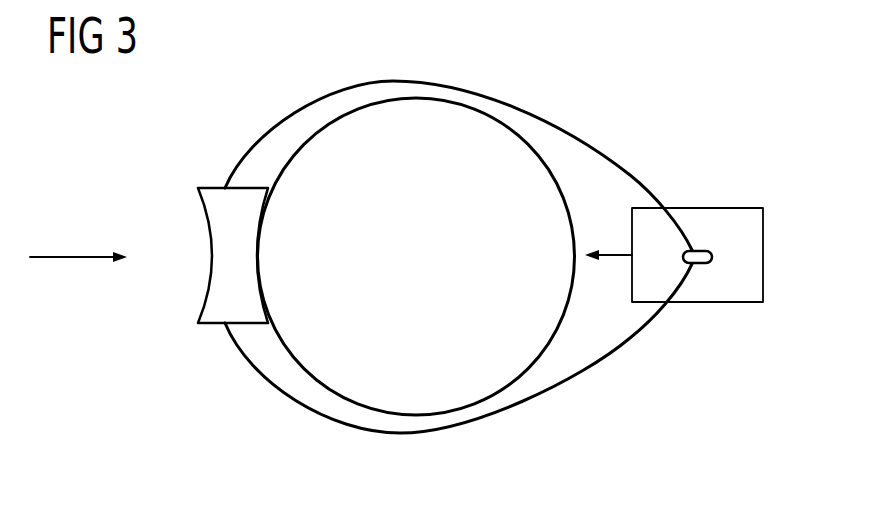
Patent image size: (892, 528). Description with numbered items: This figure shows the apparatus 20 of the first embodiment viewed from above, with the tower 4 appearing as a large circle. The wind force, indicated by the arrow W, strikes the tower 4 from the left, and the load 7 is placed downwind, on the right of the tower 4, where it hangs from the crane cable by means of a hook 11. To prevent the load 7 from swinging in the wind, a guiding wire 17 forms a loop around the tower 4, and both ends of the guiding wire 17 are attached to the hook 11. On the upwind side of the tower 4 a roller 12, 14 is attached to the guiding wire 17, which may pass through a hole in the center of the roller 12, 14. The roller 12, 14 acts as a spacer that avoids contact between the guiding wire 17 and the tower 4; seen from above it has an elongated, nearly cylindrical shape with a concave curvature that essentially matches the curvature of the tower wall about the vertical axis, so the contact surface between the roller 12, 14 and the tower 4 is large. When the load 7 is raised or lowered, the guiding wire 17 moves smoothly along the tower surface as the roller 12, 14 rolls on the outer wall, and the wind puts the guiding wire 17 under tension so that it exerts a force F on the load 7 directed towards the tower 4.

The guiding wire 17 is at (512, 106).
The apparatus 20 is at (244, 423).
The tower 4 is at (550, 348).
The roller 12 is at (206, 295).
The optical element 14 is at (171, 259).
The load 7 is at (763, 255).
The hook 11 is at (700, 250).
The force F is at (612, 255).
The wind force direction W is at (73, 256).